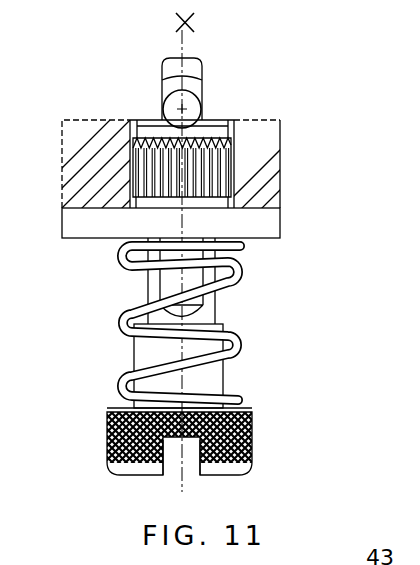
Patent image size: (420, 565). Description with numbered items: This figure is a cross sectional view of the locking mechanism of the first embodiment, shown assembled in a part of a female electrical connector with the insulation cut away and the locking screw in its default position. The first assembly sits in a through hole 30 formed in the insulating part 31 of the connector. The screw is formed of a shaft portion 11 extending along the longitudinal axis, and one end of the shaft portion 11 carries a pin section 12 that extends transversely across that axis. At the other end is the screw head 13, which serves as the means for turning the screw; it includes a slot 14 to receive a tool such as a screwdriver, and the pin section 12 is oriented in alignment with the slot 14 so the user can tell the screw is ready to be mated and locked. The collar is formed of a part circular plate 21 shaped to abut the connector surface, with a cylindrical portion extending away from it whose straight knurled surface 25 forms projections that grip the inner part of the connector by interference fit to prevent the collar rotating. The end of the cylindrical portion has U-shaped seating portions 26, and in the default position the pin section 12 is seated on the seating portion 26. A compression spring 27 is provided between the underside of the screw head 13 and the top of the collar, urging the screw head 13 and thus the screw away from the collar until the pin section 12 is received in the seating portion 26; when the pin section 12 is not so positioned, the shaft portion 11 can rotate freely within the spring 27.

The shaft portion 11 is at (145, 274).
The pin section 12 is at (212, 88).
The screw head 13 is at (252, 436).
The slot 14 is at (188, 466).
The plate 21 is at (280, 227).
The straight knurled surface 25 is at (233, 163).
The seating portion 26 is at (163, 112).
The compression spring 27 is at (243, 280).
The through hole 30 is at (133, 118).
The insulating part 31 is at (280, 118).